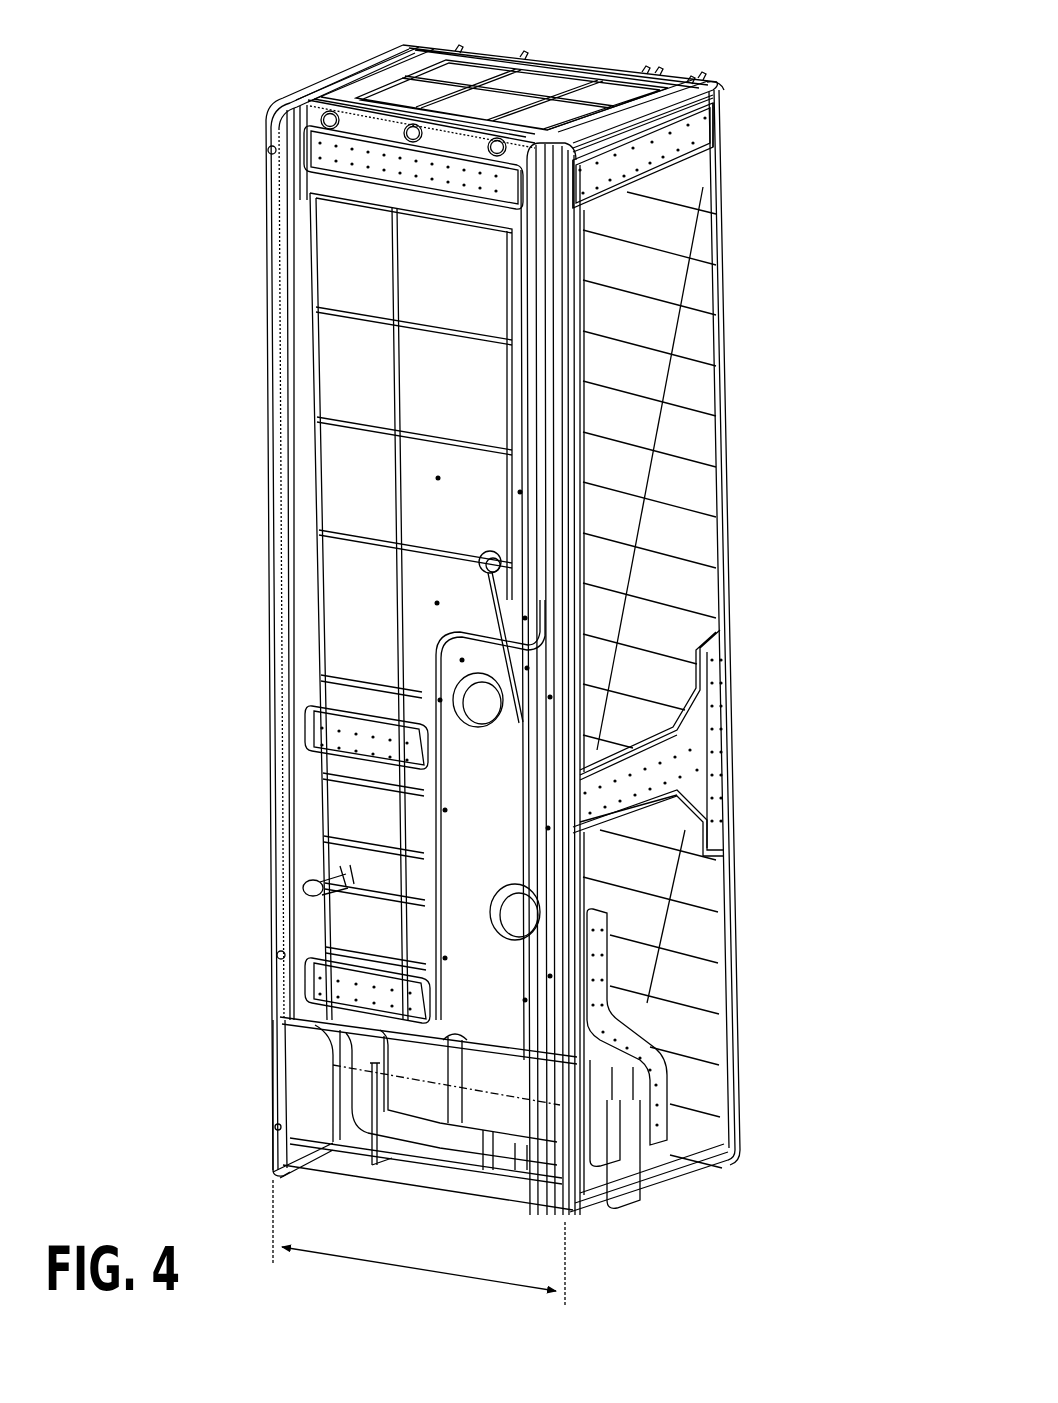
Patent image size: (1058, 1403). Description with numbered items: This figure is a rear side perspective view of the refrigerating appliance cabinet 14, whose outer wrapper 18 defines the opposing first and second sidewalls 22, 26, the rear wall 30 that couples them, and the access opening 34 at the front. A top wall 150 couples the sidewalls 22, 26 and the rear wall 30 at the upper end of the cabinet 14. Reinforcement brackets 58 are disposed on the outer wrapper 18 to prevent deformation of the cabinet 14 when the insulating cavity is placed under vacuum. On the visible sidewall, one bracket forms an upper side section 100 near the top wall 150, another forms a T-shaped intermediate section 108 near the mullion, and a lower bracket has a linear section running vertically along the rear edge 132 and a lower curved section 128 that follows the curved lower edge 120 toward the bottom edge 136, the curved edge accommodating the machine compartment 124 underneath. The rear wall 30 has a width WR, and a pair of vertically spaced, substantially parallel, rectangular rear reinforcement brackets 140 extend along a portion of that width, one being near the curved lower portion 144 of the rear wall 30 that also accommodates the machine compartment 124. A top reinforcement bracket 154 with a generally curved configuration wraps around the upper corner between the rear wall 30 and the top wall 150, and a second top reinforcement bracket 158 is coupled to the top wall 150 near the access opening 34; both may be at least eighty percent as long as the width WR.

The cabinet 14 is at (783, 183).
The outer wrapper 18 is at (345, 345).
The first sidewall 22 is at (700, 352).
The second sidewall 26 is at (327, 80).
The rear wall 30 is at (345, 500).
The access opening 34 is at (737, 272).
The reinforcement brackets 58 is at (565, 53).
The upper side section 100 is at (660, 152).
The intermediate section 108 is at (710, 757).
The curved lower edge 120 is at (628, 1190).
The machine compartment 124 is at (447, 1182).
The lower curved section 128 is at (655, 1068).
The rear edge 132 is at (572, 832).
The bottom edge 136 is at (720, 1162).
The rear reinforcement brackets 140 is at (360, 740).
The curved lower portion 144 is at (432, 1100).
The top wall 150 is at (470, 87).
The top reinforcement bracket 154 is at (390, 175).
The second top reinforcement bracket 158 is at (660, 78).
The width of the rear wall WR is at (395, 1265).